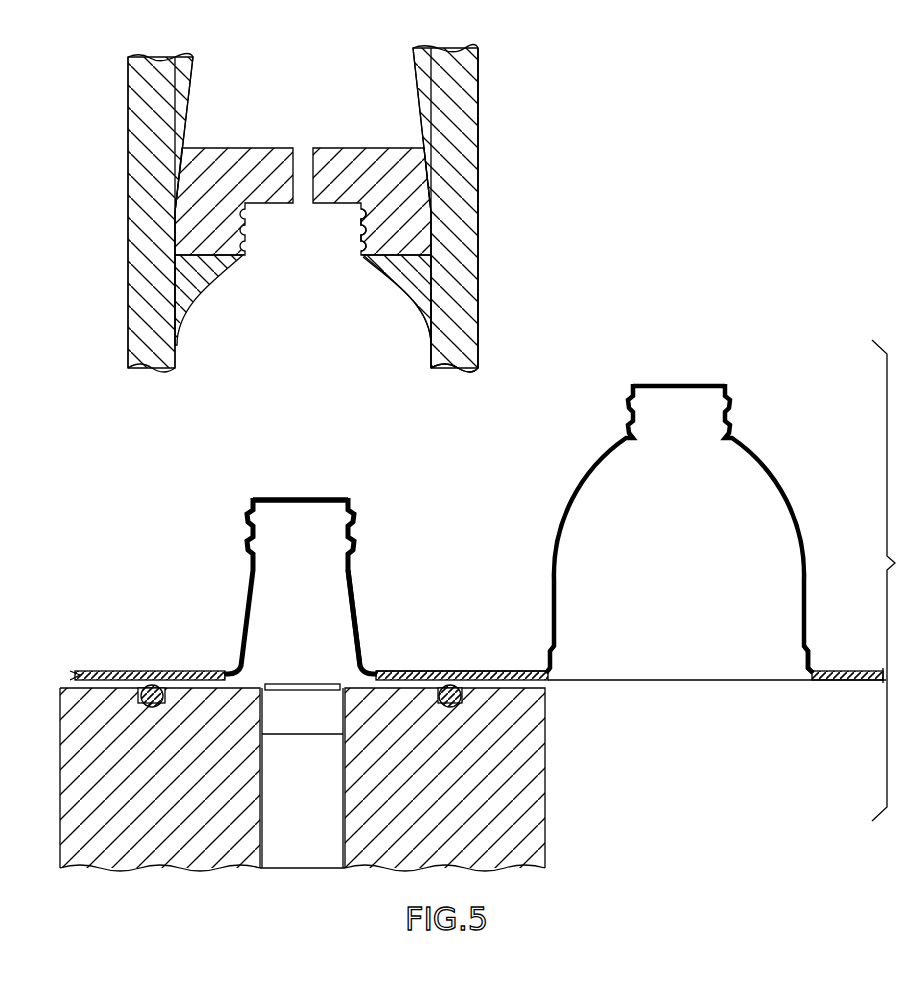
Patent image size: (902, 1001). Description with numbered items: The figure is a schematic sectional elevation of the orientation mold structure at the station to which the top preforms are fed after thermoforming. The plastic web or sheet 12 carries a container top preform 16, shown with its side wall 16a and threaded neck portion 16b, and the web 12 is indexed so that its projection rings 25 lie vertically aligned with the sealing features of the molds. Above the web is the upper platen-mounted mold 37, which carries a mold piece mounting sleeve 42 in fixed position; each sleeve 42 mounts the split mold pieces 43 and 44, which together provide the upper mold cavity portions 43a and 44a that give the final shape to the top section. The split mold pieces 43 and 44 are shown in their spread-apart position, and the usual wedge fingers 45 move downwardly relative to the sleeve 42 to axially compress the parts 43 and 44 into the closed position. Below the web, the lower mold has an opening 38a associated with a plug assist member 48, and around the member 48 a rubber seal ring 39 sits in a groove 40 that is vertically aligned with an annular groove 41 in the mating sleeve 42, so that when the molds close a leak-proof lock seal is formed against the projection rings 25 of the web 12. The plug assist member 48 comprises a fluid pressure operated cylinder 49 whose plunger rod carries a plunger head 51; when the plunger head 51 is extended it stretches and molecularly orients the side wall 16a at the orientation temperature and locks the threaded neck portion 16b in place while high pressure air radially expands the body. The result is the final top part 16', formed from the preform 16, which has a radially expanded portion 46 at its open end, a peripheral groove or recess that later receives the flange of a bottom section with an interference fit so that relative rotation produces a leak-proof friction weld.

The wedge finger 45 is at (182, 92).
The split mold piece 43 is at (190, 212).
The upper mold cavity portion 43a is at (346, 228).
The split mold piece 44 is at (420, 270).
The upper mold cavity portion 44a is at (412, 290).
The upper platen-mounted mold 37 is at (484, 214).
The mold piece mounting sleeve 42 is at (470, 326).
The annular groove 41 is at (456, 352).
The plastic web 12 is at (400, 668).
The container top preform 16 is at (330, 586).
The threaded neck portion 16b is at (350, 512).
The side wall 16a is at (364, 607).
The projection ring 25 is at (526, 668).
The final top part 16' is at (712, 528).
The radially expanded portion 46 is at (814, 664).
The opening 38a is at (342, 830).
The groove 40 is at (140, 700).
The rubber seal ring 39 is at (160, 690).
The fluid pressure operated cylinder 49 is at (311, 802).
The plunger head 51 is at (290, 690).
The plug assist member 48 is at (280, 868).